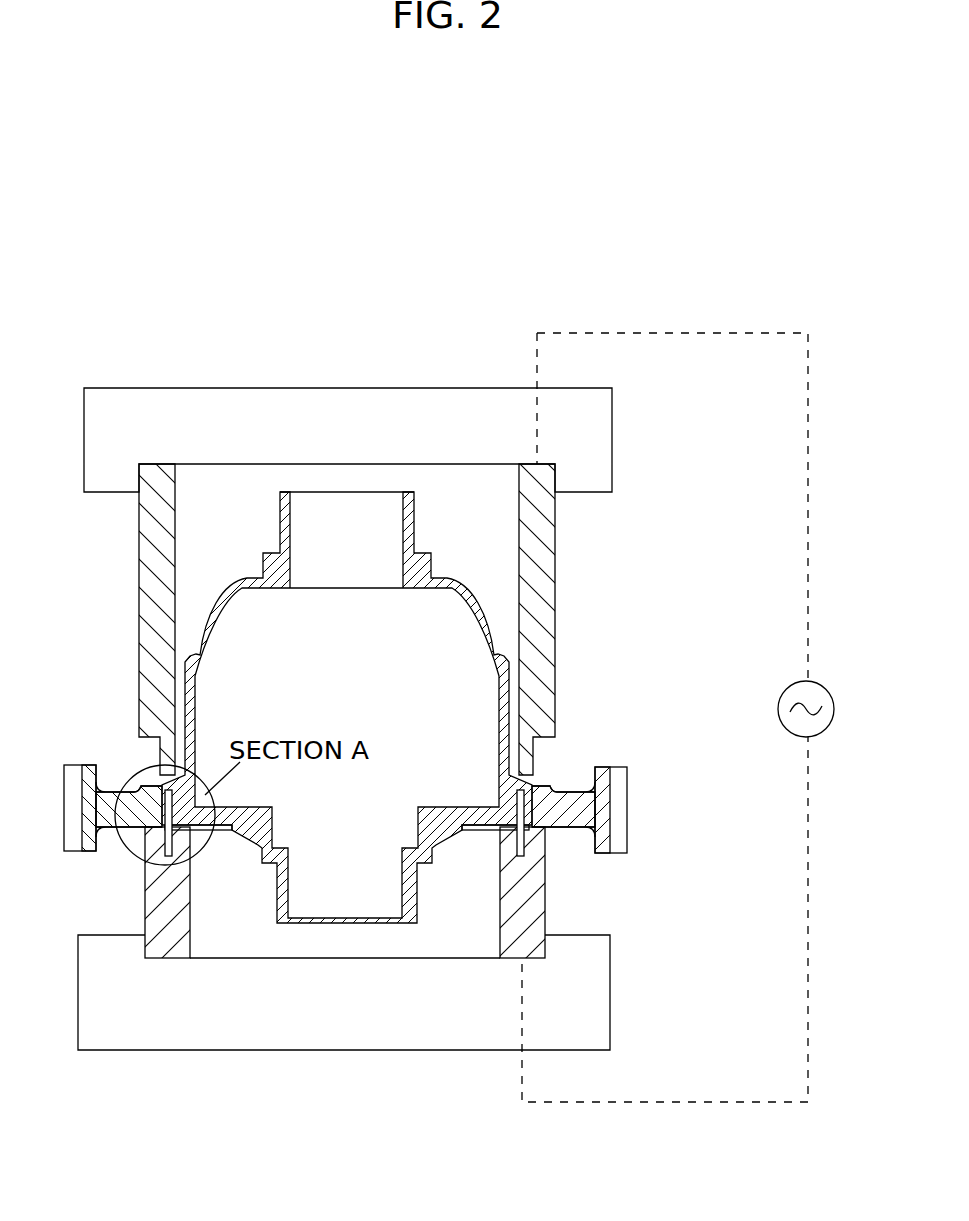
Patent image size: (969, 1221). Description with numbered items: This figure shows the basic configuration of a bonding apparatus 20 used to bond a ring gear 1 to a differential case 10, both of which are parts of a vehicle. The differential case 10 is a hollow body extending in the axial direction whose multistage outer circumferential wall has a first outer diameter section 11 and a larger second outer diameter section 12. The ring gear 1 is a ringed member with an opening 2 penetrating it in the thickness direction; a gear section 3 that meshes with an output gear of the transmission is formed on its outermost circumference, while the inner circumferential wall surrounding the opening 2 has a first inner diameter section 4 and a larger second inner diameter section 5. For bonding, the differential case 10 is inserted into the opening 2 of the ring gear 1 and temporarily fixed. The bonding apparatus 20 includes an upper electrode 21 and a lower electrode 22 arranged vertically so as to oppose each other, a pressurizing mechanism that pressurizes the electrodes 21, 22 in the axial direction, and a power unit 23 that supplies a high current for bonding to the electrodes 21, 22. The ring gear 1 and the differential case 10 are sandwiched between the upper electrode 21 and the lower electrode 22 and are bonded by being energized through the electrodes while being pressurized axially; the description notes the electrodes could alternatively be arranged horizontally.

The ring gear 1 is at (343, 834).
The opening 2 is at (216, 832).
The gear section 3 is at (70, 812).
The first inner diameter section 4 is at (535, 848).
The second inner diameter section 5 is at (545, 806).
The differential case 10 is at (395, 701).
The first outer diameter section 11 is at (497, 796).
The second outer diameter section 12 is at (530, 784).
The bonding apparatus 20 is at (600, 288).
The upper electrode 21 is at (530, 588).
The lower electrode 22 is at (515, 915).
The power unit 23 is at (826, 688).